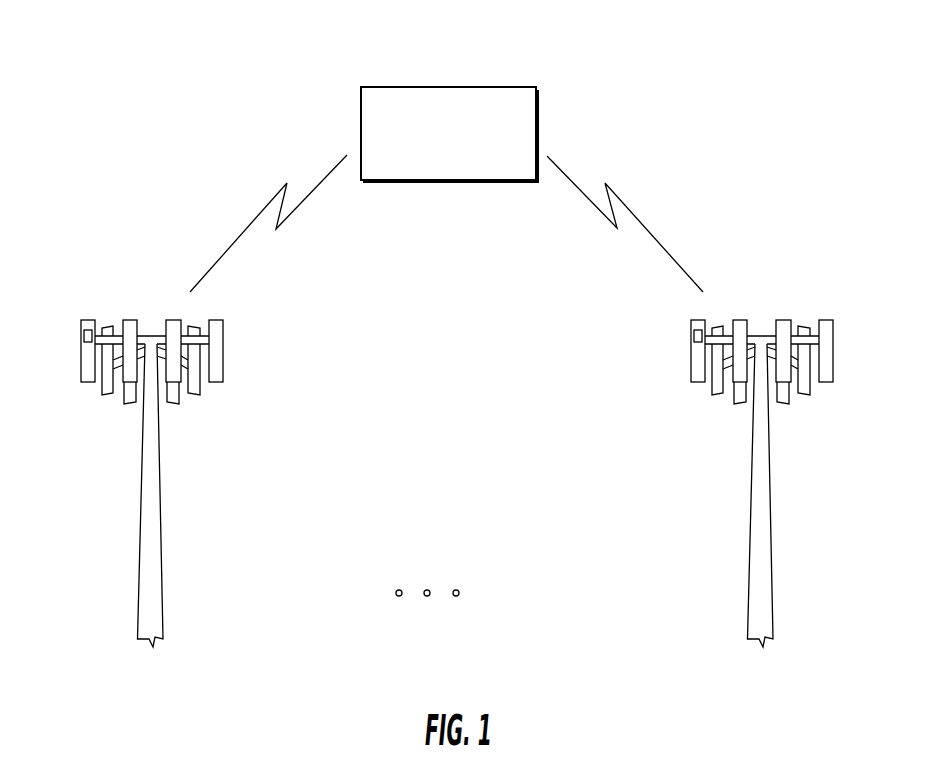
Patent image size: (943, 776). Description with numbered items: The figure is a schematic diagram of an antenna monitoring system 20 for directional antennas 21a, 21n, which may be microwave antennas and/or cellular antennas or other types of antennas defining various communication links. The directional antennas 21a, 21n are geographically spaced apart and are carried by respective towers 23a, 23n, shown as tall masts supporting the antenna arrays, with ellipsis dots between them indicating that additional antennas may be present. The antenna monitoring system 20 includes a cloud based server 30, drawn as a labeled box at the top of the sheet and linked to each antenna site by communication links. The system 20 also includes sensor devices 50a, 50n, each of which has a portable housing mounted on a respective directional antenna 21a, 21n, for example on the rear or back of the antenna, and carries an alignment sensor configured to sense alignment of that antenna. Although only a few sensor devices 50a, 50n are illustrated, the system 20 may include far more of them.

The antenna monitoring system 20 is at (98, 99).
The cloud based server 30 is at (545, 123).
The directional antenna 21a is at (87, 359).
The directional antenna 21n is at (697, 359).
The sensor device 50a is at (83, 335).
The sensor device 50n is at (693, 335).
The tower 23a is at (147, 593).
The tower 23n is at (757, 593).